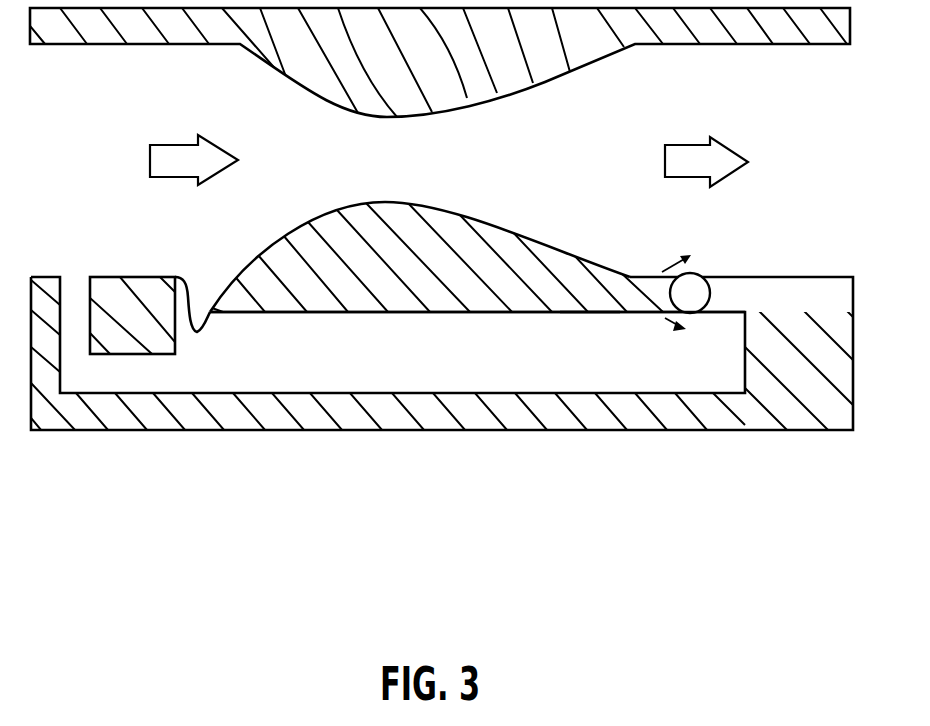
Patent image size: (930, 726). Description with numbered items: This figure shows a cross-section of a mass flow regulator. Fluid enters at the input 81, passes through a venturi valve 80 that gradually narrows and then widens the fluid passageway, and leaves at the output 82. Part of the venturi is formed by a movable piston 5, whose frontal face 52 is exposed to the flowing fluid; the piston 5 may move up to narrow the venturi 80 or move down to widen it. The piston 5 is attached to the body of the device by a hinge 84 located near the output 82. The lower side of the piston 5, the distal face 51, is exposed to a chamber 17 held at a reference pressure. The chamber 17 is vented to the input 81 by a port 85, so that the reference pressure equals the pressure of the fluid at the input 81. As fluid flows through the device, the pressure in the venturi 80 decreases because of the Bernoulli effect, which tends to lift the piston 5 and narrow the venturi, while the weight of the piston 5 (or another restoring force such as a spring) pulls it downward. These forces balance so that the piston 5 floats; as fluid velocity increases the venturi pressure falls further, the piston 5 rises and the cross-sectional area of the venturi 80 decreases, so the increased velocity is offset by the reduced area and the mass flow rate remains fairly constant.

The piston 5 is at (475, 316).
The chamber 17 is at (418, 368).
The distal face 51 is at (587, 313).
The frontal face 52 is at (543, 238).
The venturi valve 80 is at (420, 170).
The input 81 is at (69, 176).
The output 82 is at (838, 169).
The hinge 84 is at (697, 314).
The port 85 is at (77, 279).